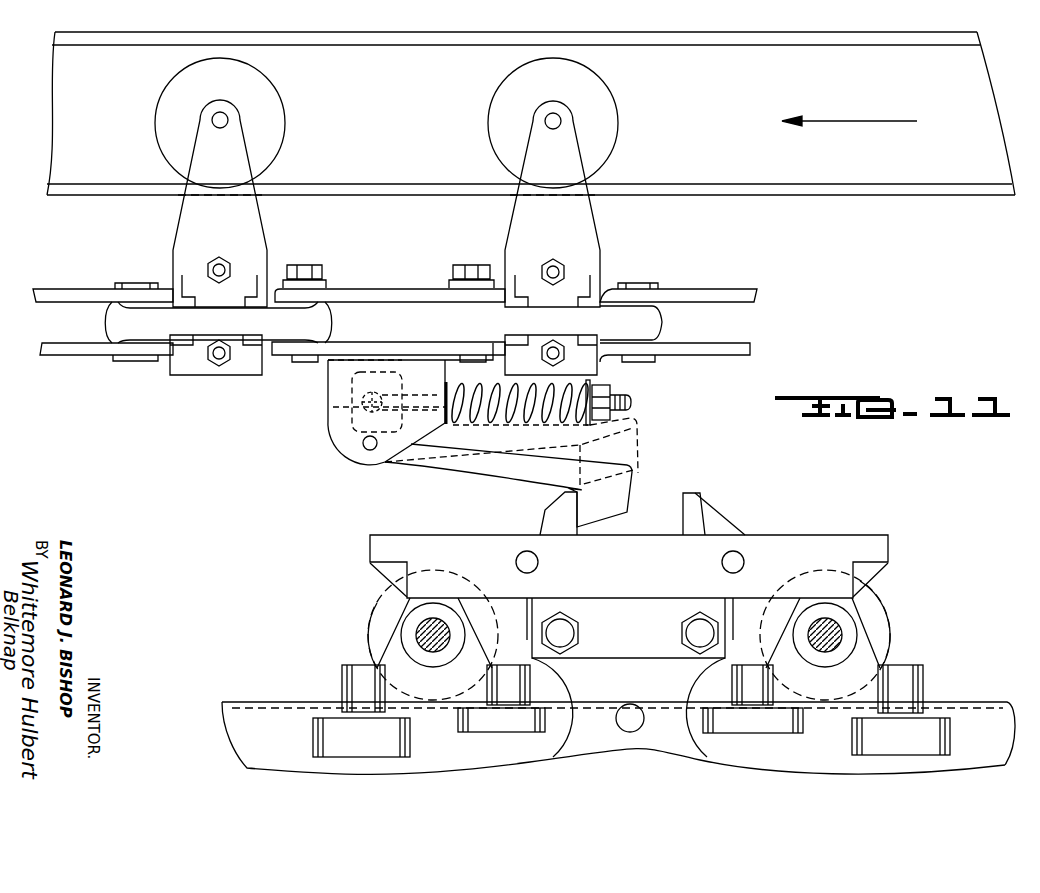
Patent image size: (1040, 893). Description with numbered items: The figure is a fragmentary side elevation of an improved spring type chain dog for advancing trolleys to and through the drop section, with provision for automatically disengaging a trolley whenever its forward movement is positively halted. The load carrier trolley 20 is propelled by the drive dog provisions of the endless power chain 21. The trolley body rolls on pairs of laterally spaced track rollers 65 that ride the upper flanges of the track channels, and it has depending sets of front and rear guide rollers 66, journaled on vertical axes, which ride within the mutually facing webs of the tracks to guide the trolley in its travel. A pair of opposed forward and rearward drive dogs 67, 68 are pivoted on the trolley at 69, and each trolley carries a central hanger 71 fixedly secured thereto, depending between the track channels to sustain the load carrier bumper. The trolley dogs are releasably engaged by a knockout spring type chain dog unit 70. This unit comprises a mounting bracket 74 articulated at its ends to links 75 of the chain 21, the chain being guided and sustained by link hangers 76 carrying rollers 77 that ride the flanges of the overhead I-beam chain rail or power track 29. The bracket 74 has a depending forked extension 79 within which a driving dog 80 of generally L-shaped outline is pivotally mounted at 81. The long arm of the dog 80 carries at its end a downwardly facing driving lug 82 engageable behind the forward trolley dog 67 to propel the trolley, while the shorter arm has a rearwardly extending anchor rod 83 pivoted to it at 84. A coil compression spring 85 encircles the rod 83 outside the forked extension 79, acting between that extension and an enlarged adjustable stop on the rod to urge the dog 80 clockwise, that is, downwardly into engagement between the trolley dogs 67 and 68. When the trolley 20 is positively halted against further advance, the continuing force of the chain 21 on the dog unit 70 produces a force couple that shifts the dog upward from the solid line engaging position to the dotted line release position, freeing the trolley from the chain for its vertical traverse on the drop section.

The trolley 20 is at (859, 534).
The power chain 21 is at (703, 292).
The chain trolley or power track 29 is at (485, 170).
The track rollers 65 is at (376, 637).
The guide rollers 66 is at (488, 723).
The forward drive dog 67 is at (547, 521).
The rearward drive dog 68 is at (723, 528).
The pivot 69 is at (538, 562).
The chain dog unit 70 is at (394, 413).
The central hanger 71 is at (638, 736).
The mounting bracket 74 is at (366, 352).
The links 75 is at (630, 307).
The link hangers 76 is at (255, 248).
The rollers 77 is at (270, 145).
The forked extension 79 is at (342, 430).
The driving dog 80 is at (431, 462).
The pivot 81 is at (368, 452).
The driving lug 82 is at (607, 512).
The anchor rod 83 is at (573, 400).
The pivot 84 is at (358, 407).
The coil compression spring 85 is at (474, 396).